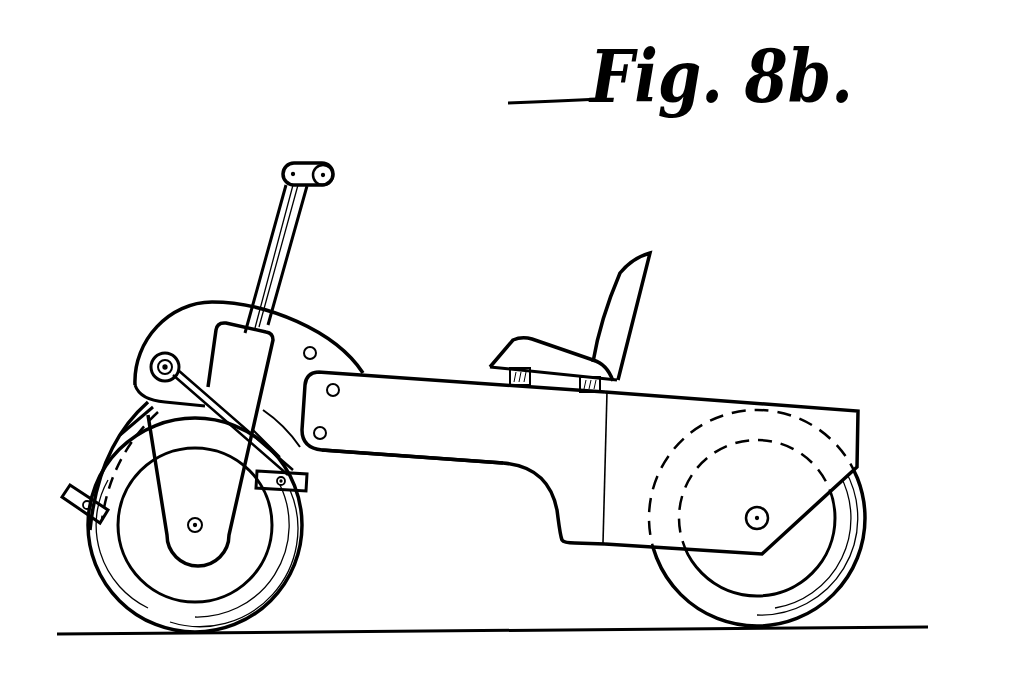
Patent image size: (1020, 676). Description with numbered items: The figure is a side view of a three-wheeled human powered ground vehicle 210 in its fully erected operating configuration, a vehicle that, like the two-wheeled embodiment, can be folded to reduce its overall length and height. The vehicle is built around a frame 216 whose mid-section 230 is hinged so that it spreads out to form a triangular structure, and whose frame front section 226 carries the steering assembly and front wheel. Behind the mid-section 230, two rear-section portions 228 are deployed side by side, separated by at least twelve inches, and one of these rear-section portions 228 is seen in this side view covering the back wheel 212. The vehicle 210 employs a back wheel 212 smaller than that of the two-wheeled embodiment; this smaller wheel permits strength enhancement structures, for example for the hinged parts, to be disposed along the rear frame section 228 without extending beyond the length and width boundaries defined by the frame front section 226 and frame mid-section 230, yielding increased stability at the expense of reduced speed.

The three-wheeled human powered ground vehicle 210 is at (470, 276).
The back wheel 212 is at (803, 567).
The frame 216 is at (453, 486).
The frame front section 226 is at (162, 308).
The rear-section portions 228 is at (795, 378).
The mid-section of frame 230 is at (473, 510).